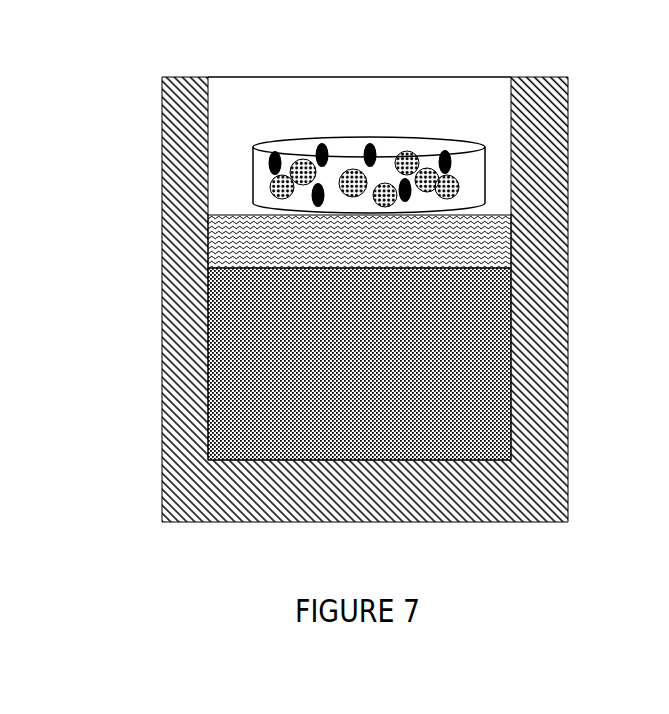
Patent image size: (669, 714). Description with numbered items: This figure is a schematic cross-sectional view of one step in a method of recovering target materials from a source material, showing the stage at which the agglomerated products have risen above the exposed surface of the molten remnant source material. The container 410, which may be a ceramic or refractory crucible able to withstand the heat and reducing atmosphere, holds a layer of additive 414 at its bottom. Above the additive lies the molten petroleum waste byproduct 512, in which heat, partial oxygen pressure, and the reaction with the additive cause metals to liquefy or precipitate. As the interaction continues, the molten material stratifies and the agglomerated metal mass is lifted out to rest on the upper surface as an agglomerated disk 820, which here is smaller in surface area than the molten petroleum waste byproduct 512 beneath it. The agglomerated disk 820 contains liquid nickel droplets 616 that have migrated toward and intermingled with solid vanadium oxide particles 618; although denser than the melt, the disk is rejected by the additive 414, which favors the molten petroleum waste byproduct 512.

The container 410 is at (150, 400).
The additive 414 is at (409, 462).
The molten petroleum waste byproduct 512 is at (256, 240).
The liquid nickel droplets 616 is at (375, 142).
The solid vanadium oxide particles 618 is at (413, 150).
The agglomerated disk 820 is at (497, 177).